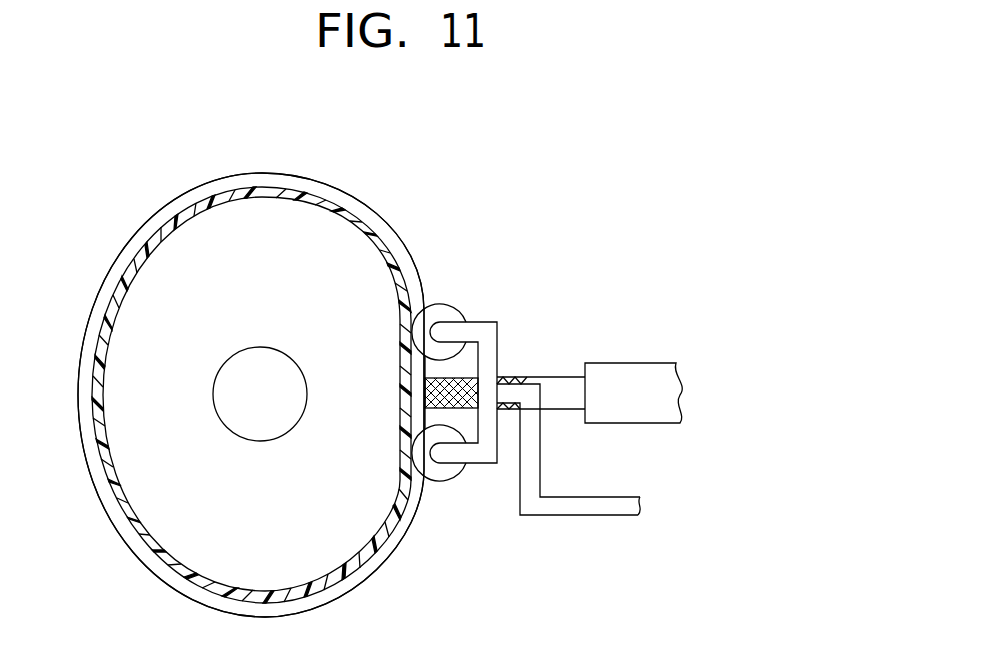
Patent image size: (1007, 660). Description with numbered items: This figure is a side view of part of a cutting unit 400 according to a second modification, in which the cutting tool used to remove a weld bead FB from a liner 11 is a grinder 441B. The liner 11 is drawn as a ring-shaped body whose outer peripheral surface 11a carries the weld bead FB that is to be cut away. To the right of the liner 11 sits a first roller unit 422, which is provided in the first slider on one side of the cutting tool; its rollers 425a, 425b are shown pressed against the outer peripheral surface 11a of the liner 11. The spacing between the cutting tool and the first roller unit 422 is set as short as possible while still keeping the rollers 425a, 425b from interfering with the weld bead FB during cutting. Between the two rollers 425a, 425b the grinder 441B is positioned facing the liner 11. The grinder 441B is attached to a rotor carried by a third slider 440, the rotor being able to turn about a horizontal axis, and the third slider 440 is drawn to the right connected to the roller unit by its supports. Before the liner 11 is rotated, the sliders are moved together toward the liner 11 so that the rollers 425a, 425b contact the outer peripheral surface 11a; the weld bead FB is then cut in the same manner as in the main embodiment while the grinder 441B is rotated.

The liner 11 is at (260, 189).
The outer peripheral surface 11a is at (343, 212).
The weld bead FB is at (360, 577).
The cutting unit 400 is at (638, 329).
The roller 425a is at (440, 304).
The roller 425b is at (447, 484).
The grinder 441B is at (460, 372).
The first roller unit 422 is at (541, 458).
The third slider 440 is at (648, 375).